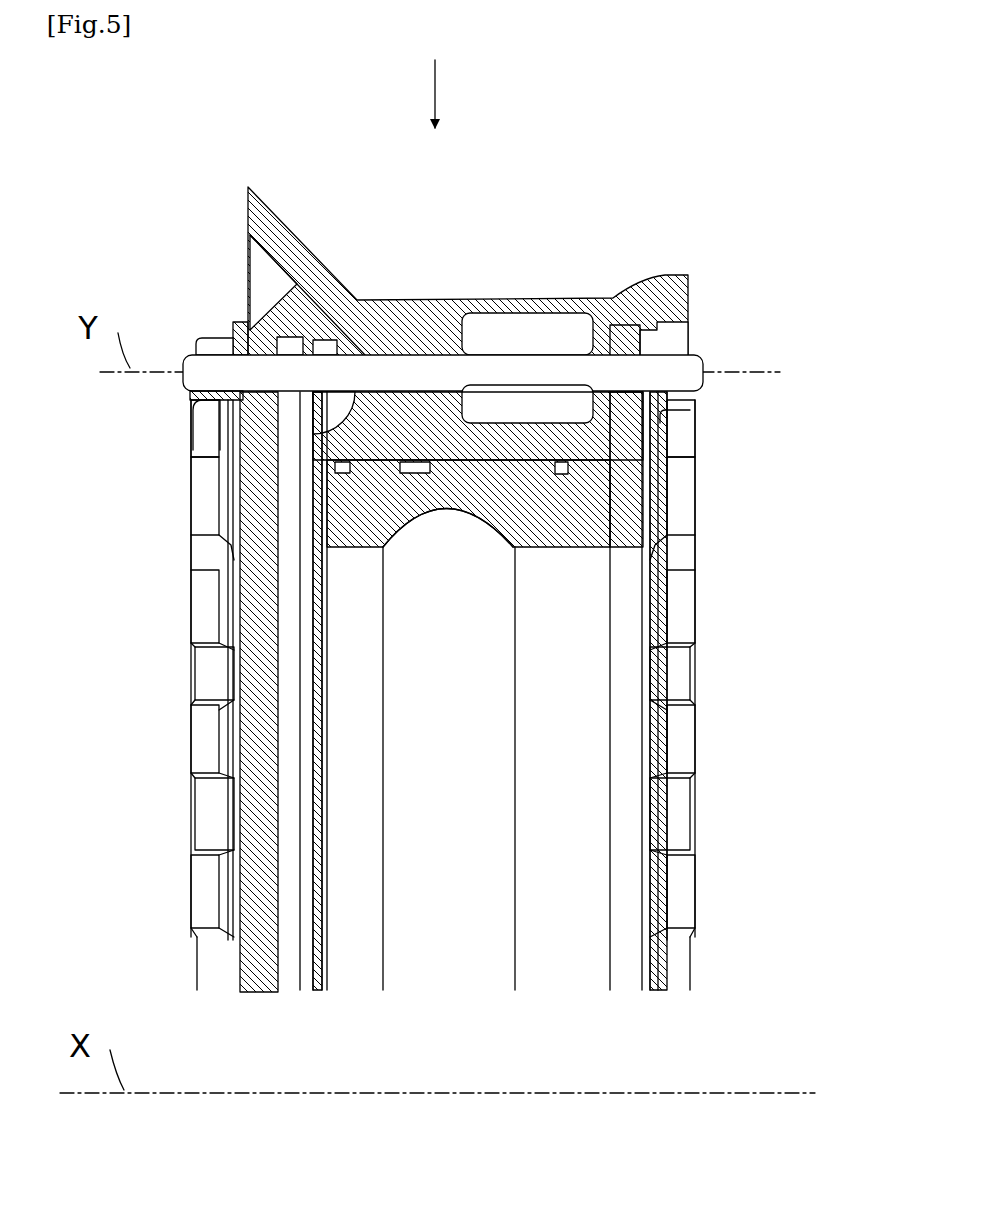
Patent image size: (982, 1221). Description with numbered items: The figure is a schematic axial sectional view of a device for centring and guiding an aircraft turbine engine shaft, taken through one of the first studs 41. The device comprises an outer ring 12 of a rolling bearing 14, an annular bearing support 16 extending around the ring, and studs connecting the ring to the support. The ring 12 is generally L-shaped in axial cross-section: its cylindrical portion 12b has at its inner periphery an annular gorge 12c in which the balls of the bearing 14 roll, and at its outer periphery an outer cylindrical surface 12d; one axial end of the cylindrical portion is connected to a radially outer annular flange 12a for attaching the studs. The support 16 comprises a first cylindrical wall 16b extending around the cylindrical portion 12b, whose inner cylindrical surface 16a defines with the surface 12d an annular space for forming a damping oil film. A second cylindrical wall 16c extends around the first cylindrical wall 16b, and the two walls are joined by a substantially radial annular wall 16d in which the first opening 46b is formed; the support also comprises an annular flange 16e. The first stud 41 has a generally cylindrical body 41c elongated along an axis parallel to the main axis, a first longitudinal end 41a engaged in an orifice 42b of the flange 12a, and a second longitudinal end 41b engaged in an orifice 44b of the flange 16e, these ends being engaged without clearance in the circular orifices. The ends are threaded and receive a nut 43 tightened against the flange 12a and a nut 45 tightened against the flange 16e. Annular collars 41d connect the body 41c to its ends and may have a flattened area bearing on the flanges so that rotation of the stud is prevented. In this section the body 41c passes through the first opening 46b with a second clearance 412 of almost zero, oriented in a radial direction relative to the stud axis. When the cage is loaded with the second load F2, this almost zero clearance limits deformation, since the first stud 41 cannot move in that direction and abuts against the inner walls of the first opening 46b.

The outer ring 12 is at (562, 968).
The rolling bearing 14 is at (313, 691).
The radially outer annular flange 12a is at (632, 415).
The cylindrical portion 12b is at (353, 520).
The annular gorge 12c is at (437, 522).
The outer cylindrical surface 12d is at (492, 452).
The annular bearing support 16 is at (306, 222).
The inner cylindrical surface 16a is at (437, 445).
The first cylindrical wall 16b is at (550, 443).
The second cylindrical wall 16c is at (403, 318).
The substantially radial annular wall 16d is at (286, 232).
The annular flange 16e is at (267, 955).
The first stud 41 is at (522, 362).
The first longitudinal end 41a is at (690, 347).
The second longitudinal end 41b is at (203, 340).
The body 41c is at (550, 328).
The annular collar 41d is at (287, 393).
The second clearance 412 is at (362, 408).
The orifice 42b is at (630, 352).
The nut 43 is at (678, 402).
The orifice 44b is at (262, 330).
The nut 45 is at (200, 403).
The first opening 46b is at (383, 355).
The second load F2 is at (437, 100).